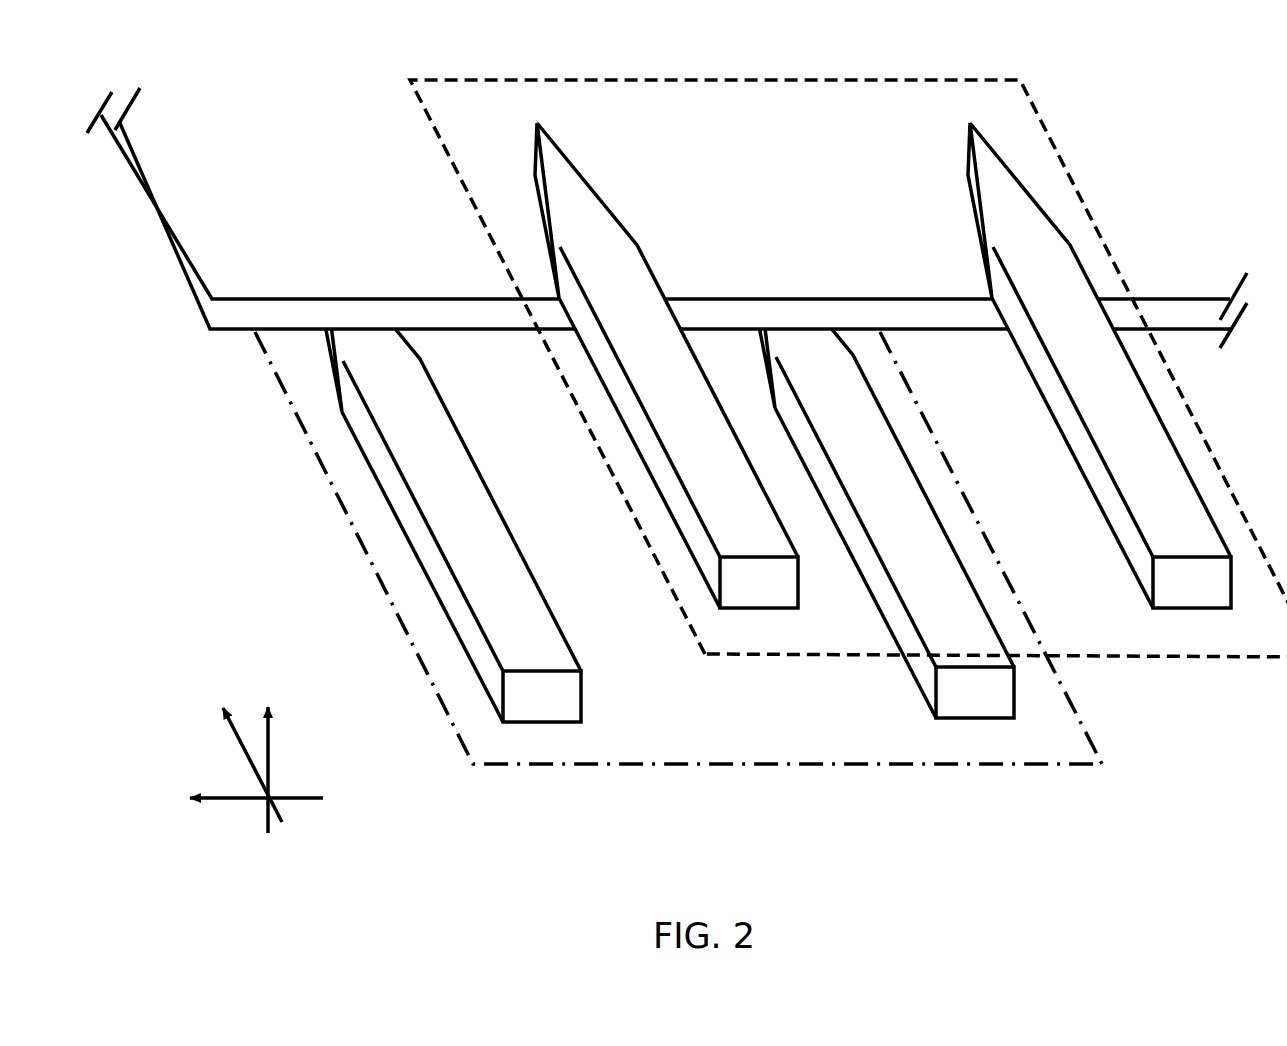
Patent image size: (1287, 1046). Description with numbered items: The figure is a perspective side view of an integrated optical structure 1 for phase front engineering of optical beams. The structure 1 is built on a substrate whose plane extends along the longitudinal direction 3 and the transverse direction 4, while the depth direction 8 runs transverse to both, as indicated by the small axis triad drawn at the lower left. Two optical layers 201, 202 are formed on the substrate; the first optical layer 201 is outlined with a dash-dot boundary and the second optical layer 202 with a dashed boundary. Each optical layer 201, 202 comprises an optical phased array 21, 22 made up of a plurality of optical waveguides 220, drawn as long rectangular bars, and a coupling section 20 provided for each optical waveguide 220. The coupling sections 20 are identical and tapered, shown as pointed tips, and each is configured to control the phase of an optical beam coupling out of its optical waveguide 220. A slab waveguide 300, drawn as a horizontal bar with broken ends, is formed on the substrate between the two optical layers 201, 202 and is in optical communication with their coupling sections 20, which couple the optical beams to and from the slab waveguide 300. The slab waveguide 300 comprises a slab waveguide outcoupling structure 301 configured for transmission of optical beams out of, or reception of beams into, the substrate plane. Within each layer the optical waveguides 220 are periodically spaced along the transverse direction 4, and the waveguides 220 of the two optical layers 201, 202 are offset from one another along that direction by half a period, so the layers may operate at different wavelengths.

The integrated optical structure 1 is at (278, 494).
The coupling section 20 is at (610, 176).
The optical waveguide 220 is at (752, 609).
The slab waveguide 300 is at (203, 150).
The slab waveguide outcoupling structure 301 is at (291, 168).
The optical layer 201 is at (736, 754).
The optical layer 202 is at (511, 86).
The optical phased array 21 is at (823, 768).
The optical phased array 22 is at (1198, 658).
The longitudinal direction 3 is at (235, 740).
The transverse direction 4 is at (213, 802).
The depth direction 8 is at (270, 725).